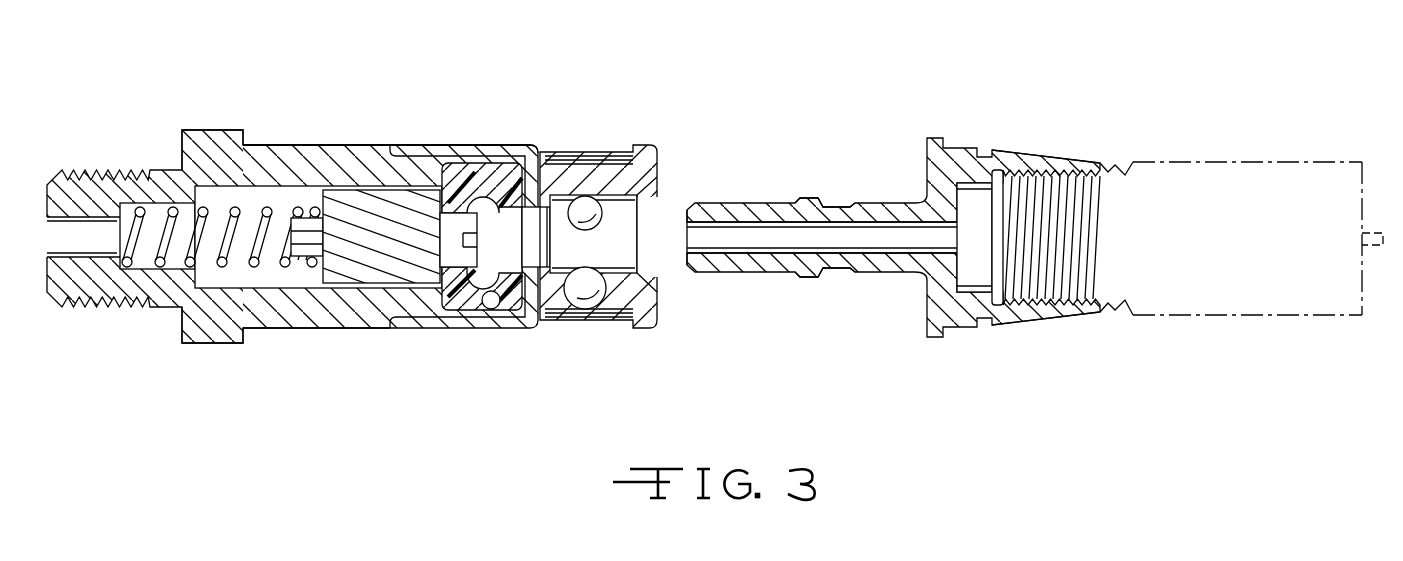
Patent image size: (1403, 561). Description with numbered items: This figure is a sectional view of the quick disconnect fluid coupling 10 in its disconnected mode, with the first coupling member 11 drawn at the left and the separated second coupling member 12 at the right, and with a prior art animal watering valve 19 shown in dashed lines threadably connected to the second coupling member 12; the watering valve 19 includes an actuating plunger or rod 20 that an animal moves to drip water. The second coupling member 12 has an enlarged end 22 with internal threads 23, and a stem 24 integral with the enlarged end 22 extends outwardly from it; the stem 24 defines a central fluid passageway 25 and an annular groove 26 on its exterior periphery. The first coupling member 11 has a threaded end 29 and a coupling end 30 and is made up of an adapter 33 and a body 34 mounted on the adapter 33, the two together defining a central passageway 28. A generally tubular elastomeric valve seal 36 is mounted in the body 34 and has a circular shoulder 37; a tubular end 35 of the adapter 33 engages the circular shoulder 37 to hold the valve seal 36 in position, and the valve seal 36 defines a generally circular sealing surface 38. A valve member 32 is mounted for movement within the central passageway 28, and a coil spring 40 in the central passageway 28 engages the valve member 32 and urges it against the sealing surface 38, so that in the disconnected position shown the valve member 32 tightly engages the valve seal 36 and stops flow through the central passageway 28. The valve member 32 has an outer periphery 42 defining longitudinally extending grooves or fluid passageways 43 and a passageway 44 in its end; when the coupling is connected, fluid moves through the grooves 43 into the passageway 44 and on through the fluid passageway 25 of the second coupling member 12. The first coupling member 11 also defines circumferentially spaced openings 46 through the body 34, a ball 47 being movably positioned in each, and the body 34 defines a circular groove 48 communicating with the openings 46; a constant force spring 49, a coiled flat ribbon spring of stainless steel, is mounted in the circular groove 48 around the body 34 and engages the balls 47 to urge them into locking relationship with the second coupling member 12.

The quick disconnect fluid coupling 10 is at (447, 138).
The first coupling member 11 is at (347, 300).
The second coupling member 12 is at (880, 203).
The animal watering valve 19 is at (1170, 162).
The actuating plunger or rod 20 is at (1368, 250).
The enlarged end 22 is at (1030, 152).
The internal threads 23 is at (1105, 180).
The stem 24 is at (738, 273).
The central fluid passageway 25 is at (885, 240).
The annular groove 26 is at (832, 200).
The central passageway 28 is at (262, 190).
The threaded end 29 is at (98, 178).
The coupling end 30 is at (660, 160).
The valve member 32 is at (405, 295).
The adapter 33 is at (250, 338).
The body 34 is at (463, 160).
The tubular end 35 is at (491, 310).
The elastomeric valve seal 36 is at (443, 183).
The circular shoulder 37 is at (492, 152).
The sealing surface 38 is at (447, 205).
The coil spring 40 is at (237, 183).
The outer periphery 42 is at (370, 288).
The longitudinally extending grooves 43 is at (345, 185).
The passageway 44 is at (482, 236).
The circumferentially spaced openings 46 is at (580, 272).
The ball 47 is at (633, 260).
The circular groove 48 is at (628, 152).
The constant force spring 49 is at (583, 322).